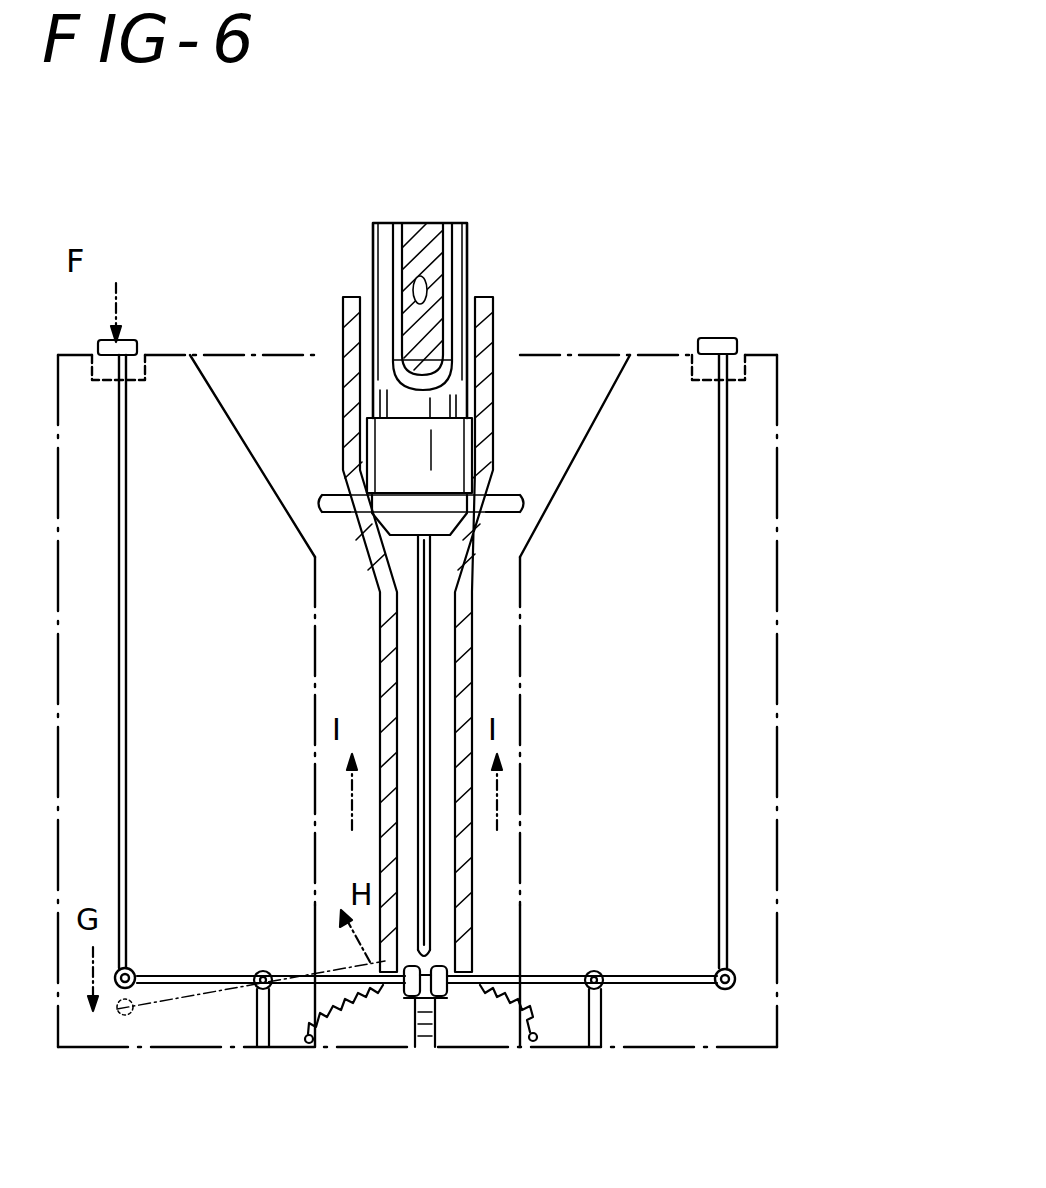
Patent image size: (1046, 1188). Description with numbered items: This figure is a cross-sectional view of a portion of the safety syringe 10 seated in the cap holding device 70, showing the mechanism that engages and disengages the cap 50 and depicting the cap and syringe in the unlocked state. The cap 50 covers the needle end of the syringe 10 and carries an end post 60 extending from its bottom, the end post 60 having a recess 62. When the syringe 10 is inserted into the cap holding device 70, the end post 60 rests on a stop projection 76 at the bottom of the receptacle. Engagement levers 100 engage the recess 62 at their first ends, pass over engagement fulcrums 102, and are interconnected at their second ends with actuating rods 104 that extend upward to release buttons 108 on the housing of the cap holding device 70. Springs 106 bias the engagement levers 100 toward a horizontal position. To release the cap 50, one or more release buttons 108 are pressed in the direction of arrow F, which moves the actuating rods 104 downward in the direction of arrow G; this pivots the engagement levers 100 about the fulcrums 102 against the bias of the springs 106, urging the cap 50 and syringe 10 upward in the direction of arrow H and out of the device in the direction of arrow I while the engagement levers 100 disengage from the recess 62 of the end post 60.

The syringe 10 is at (513, 235).
The cap 50 is at (499, 407).
The end post 60 is at (413, 993).
The recess 62 is at (447, 987).
The cap holding device 70 is at (793, 454).
The stop projection 76 is at (437, 1023).
The engagement levers 100 is at (193, 973).
The engagement fulcrums 102 is at (266, 973).
The actuating rods 104 is at (130, 752).
The springs 106 is at (311, 1043).
The release buttons 108 is at (132, 337).